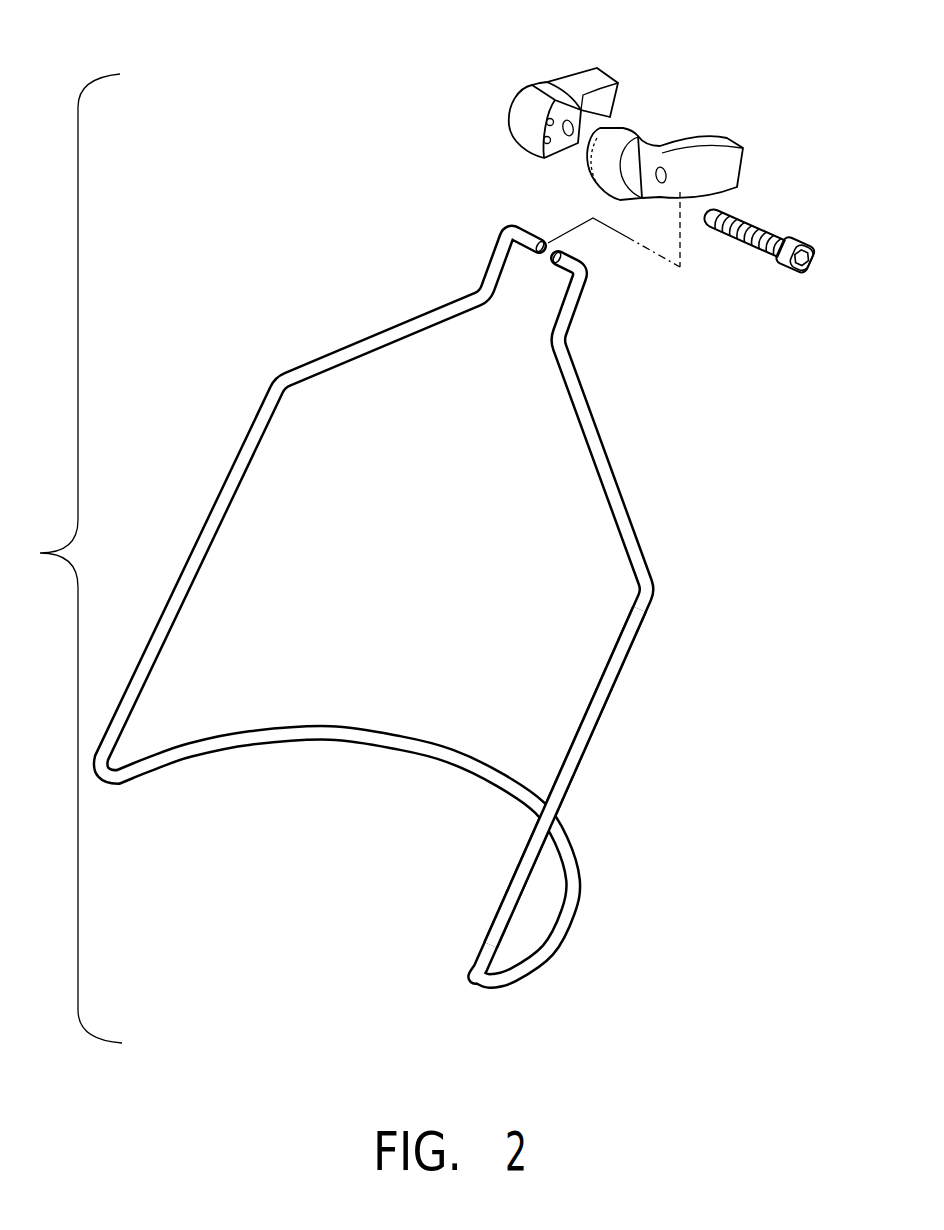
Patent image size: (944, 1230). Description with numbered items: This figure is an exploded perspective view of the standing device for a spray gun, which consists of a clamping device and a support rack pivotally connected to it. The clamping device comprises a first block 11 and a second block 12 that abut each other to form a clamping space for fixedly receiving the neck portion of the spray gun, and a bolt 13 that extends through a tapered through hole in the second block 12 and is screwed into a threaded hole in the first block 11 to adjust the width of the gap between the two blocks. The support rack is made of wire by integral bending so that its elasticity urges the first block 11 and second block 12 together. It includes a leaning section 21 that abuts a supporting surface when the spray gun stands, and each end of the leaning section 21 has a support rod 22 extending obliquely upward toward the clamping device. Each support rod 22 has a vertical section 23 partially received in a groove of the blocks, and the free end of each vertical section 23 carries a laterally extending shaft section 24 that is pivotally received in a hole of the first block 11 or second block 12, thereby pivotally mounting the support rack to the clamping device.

The first block 11 is at (560, 55).
The second block 12 is at (760, 132).
The bolt 13 is at (757, 248).
The leaning section 21 is at (407, 607).
The support rod 22 is at (407, 607).
The vertical section 23 is at (374, 607).
The shaft section 24 is at (551, 262).